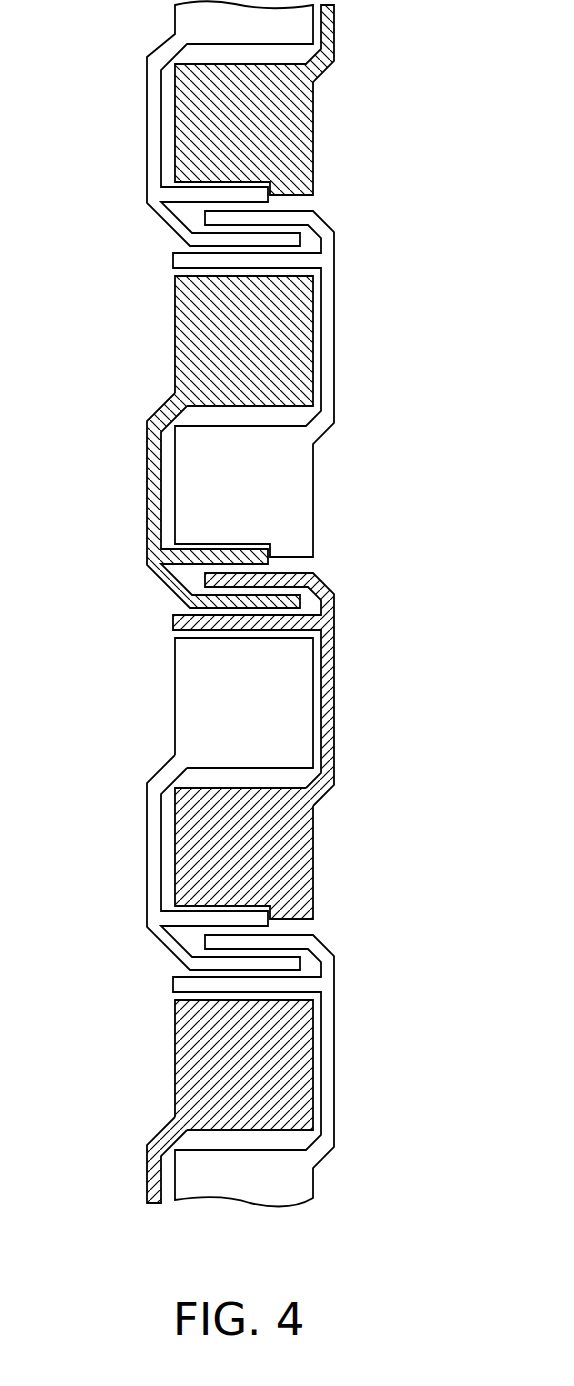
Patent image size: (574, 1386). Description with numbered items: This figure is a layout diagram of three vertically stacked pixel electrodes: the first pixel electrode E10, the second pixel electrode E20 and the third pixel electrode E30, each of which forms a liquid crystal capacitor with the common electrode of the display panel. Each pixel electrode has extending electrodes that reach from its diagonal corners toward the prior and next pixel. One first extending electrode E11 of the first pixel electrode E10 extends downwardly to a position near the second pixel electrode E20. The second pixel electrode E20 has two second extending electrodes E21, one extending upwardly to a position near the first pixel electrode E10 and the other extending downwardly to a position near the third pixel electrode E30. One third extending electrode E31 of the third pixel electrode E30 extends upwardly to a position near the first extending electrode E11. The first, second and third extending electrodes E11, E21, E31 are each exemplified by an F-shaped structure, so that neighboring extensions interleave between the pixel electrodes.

The first pixel electrode E10 is at (313, 118).
The first extending electrode E11 is at (147, 555).
The second pixel electrode E20 is at (313, 522).
The second extending electrode E21 is at (147, 927).
The third pixel electrode E30 is at (313, 859).
The third extending electrode E31 is at (335, 590).